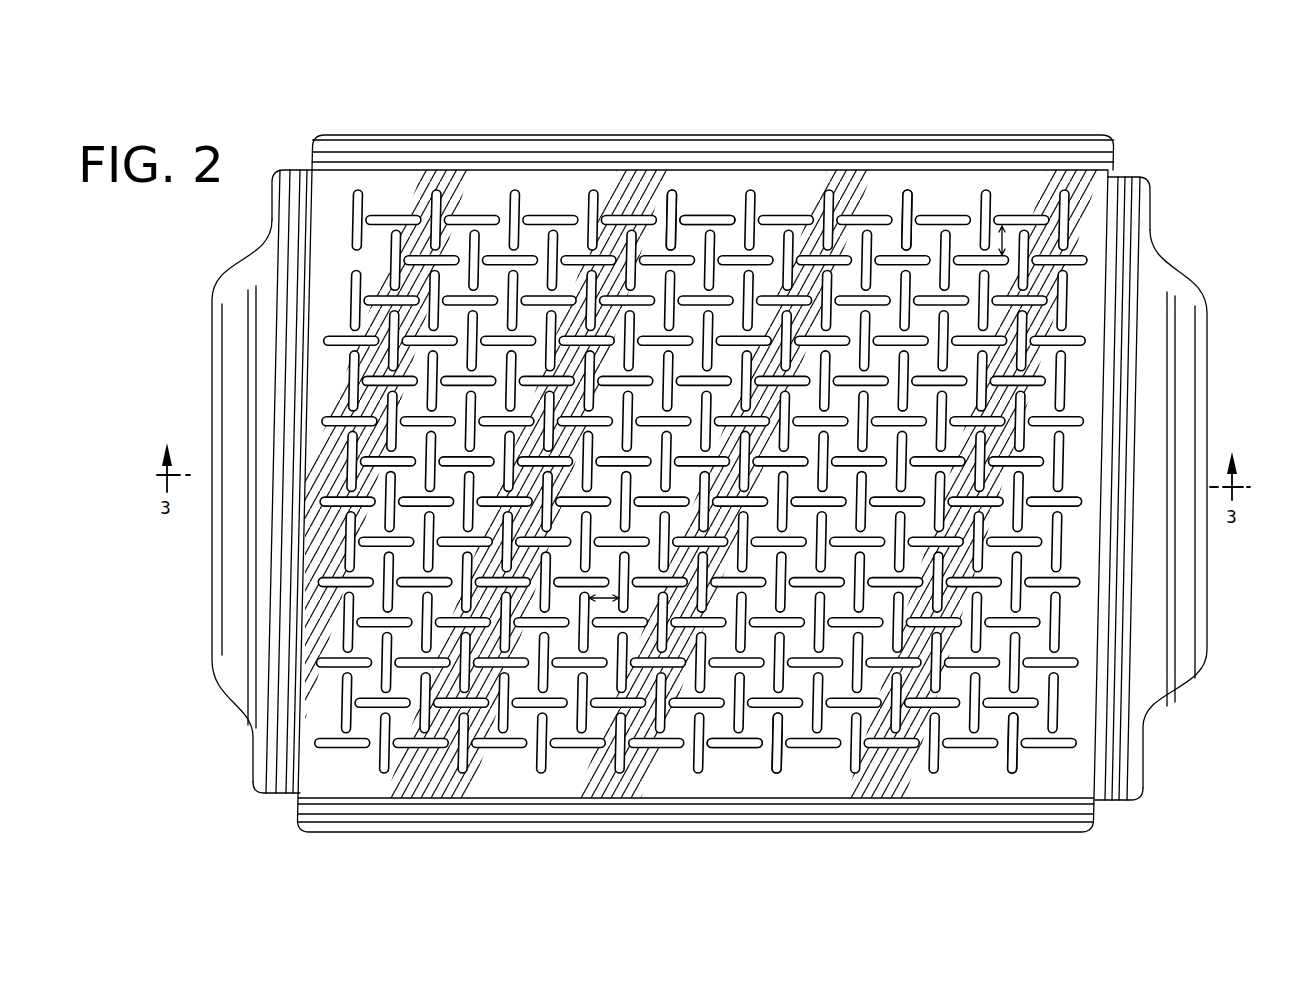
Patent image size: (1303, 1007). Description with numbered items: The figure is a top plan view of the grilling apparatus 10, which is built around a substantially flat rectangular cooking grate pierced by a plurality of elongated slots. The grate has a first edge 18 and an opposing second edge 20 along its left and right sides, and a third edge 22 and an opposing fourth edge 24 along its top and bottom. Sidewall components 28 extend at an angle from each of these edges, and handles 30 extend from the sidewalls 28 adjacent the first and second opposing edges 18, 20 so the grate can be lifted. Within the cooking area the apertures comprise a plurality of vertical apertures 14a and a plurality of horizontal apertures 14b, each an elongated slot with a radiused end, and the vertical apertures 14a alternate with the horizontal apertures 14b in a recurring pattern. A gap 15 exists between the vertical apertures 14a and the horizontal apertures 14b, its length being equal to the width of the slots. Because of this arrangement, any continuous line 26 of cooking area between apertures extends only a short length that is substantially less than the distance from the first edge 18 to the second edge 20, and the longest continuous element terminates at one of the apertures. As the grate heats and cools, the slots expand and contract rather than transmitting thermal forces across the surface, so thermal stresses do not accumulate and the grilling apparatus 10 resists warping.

The grilling apparatus 10 is at (1177, 98).
The vertical apertures 14a is at (672, 203).
The horizontal apertures 14b is at (720, 220).
The gap 15 is at (912, 215).
The first edge 18 is at (300, 757).
The second edge 20 is at (1112, 218).
The third edge 22 is at (490, 172).
The fourth edge 24 is at (377, 798).
The continuous line 26 is at (1003, 237).
The sidewall components 28 is at (553, 141).
The handles 30 is at (1205, 412).